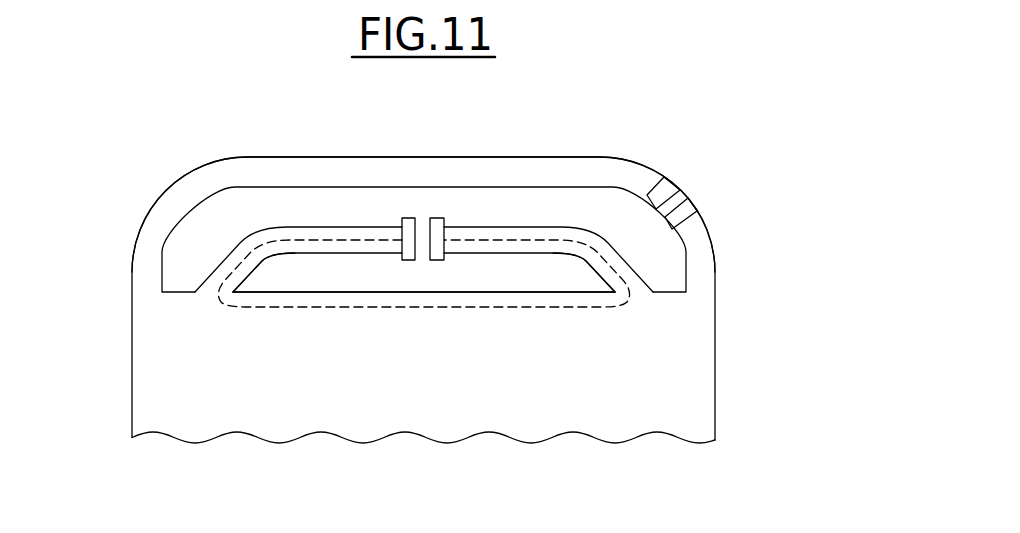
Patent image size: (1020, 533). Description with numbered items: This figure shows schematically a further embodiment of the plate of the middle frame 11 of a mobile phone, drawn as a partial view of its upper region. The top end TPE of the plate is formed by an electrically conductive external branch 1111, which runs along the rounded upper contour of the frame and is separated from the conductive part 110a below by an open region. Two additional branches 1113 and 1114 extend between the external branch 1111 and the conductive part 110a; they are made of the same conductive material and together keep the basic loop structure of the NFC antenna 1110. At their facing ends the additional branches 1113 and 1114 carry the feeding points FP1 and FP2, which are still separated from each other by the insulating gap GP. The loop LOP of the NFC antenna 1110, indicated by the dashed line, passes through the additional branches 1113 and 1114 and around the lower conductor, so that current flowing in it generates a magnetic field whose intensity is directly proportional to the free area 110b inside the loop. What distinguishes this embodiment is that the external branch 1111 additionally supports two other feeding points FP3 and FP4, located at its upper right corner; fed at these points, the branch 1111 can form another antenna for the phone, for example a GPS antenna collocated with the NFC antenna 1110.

The middle frame 11 is at (778, 146).
The top end of the plate TPE is at (182, 150).
The conductive part 110a is at (553, 392).
The free area 110b is at (568, 215).
The first branch 1111 is at (563, 165).
The additional branch 1113 is at (340, 232).
The additional branch 1114 is at (490, 233).
The NFC antenna 1110 is at (285, 297).
The loop LOP is at (380, 309).
The feeding point FP1 is at (405, 218).
The feeding point FP2 is at (443, 218).
The feeding point FP3 is at (668, 183).
The feeding point FP4 is at (687, 205).
The insulating gap GP is at (425, 237).